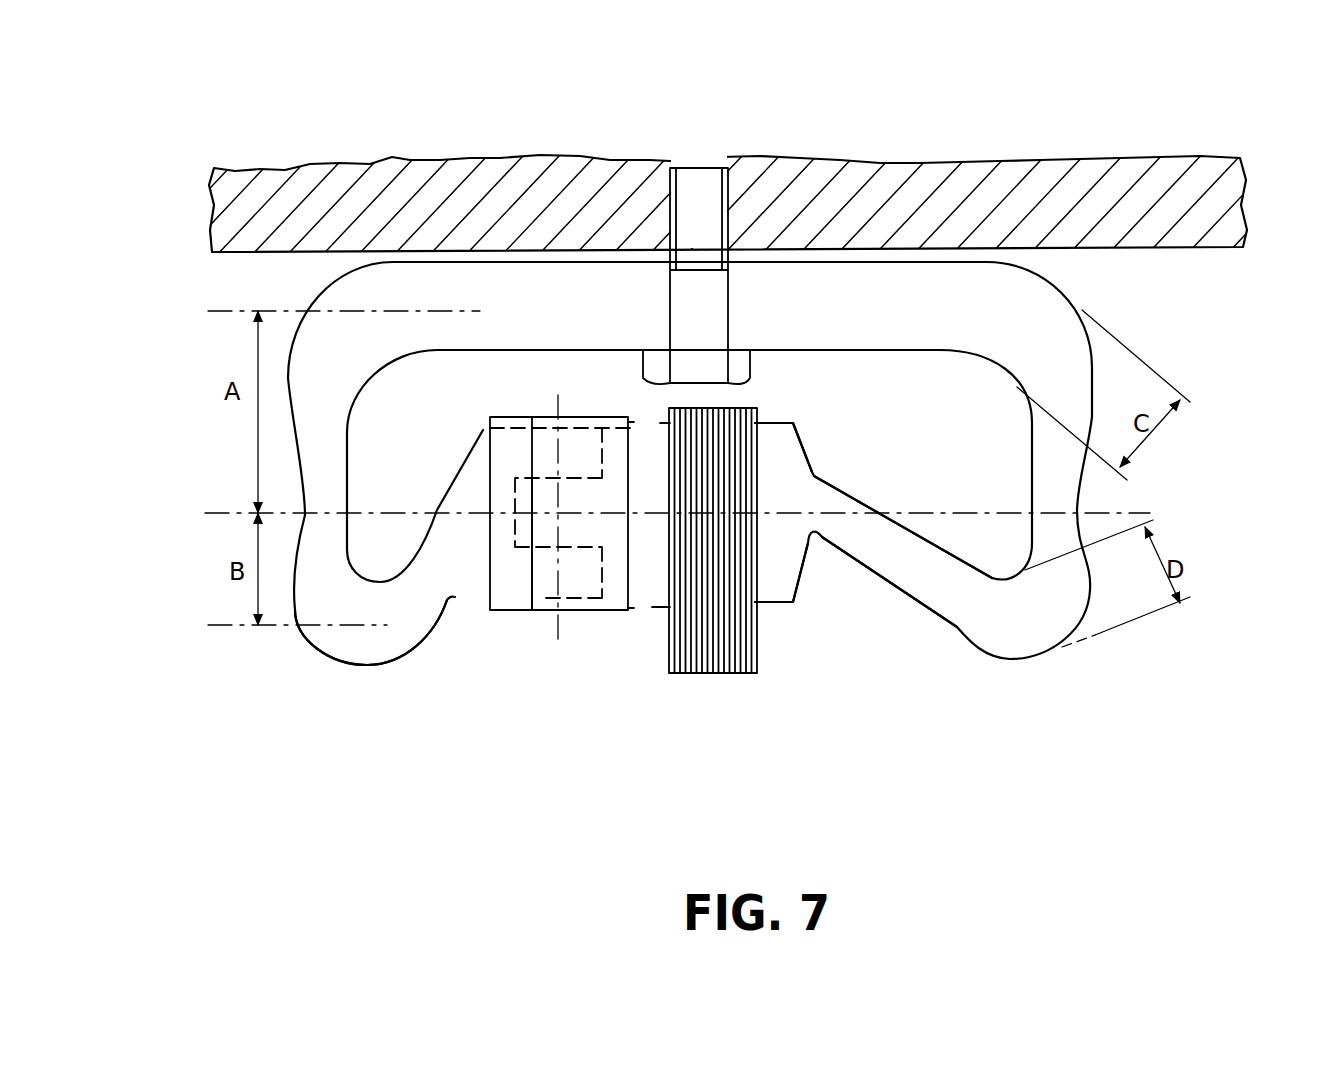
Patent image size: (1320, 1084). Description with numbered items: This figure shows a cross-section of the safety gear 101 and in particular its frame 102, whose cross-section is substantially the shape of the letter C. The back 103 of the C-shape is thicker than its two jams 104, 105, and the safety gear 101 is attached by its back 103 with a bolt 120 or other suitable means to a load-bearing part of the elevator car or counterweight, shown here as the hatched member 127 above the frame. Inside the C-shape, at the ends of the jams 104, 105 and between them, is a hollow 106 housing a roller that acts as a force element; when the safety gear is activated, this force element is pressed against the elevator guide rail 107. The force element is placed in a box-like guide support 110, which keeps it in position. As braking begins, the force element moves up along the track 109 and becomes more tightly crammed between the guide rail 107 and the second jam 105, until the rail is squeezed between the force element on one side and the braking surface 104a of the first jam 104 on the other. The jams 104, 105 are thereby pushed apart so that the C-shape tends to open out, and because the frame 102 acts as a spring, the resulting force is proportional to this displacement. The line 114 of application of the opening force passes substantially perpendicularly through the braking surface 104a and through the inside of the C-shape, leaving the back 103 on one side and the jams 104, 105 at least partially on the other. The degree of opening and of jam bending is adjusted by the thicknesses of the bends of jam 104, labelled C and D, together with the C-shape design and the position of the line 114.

The safety gear 101 is at (413, 703).
The frame 102 is at (1040, 315).
The back 103 is at (895, 273).
The first jam 104 is at (957, 623).
The braking surface 104a is at (737, 407).
The second jam 105 is at (318, 607).
The hollow 106 is at (648, 587).
The elevator guide rail 107 is at (740, 645).
The track 109 is at (550, 583).
The guide support 110 is at (535, 418).
The line of application of the force 114 is at (1150, 513).
The bolt 120 is at (698, 185).
The panel 127 is at (1062, 195).